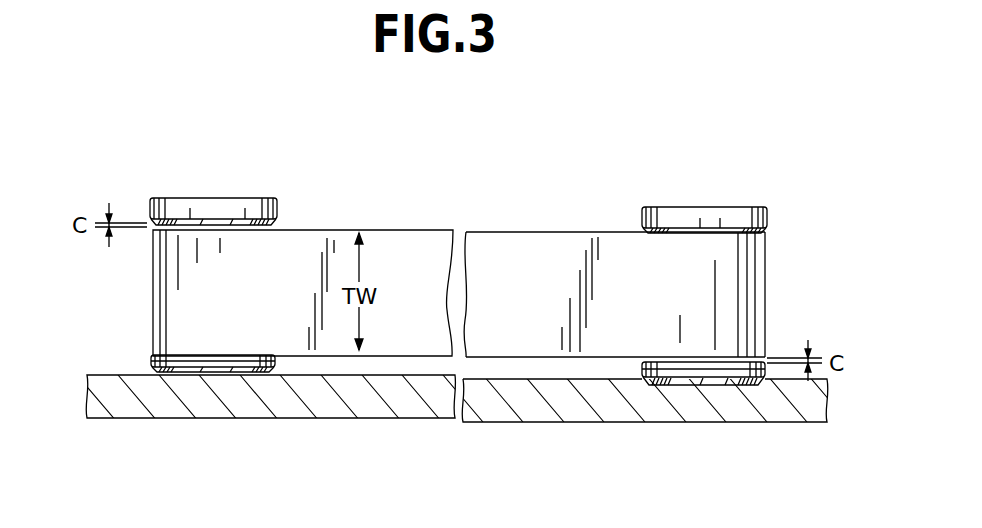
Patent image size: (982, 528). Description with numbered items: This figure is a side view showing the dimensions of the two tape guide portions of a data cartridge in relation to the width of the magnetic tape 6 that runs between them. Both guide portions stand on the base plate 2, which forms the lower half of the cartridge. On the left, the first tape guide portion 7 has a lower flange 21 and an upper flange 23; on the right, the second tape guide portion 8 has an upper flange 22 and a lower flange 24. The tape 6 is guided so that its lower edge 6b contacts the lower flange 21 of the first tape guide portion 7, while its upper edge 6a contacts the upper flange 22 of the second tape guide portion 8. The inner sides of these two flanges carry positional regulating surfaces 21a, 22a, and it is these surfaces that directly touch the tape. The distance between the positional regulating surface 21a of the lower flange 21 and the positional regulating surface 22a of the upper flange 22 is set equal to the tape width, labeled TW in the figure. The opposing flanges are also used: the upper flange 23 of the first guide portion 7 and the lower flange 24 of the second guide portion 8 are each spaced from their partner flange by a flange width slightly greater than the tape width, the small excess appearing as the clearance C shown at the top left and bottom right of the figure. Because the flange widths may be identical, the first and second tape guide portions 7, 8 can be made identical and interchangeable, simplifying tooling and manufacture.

The base plate 2 is at (402, 402).
The magnetic tape 6 is at (418, 225).
The upper edge of the tape 6a is at (516, 231).
The lower edge of the tape 6b is at (522, 358).
The first tape guide portion 7 is at (224, 158).
The second tape guide portion 8 is at (689, 162).
The lower flange 21 is at (173, 401).
The positional regulating surface 21a is at (151, 357).
The upper flange 22 is at (758, 207).
The positional regulating surface 22a is at (645, 231).
The upper flange 23 is at (264, 197).
The lower flange 24 is at (711, 382).